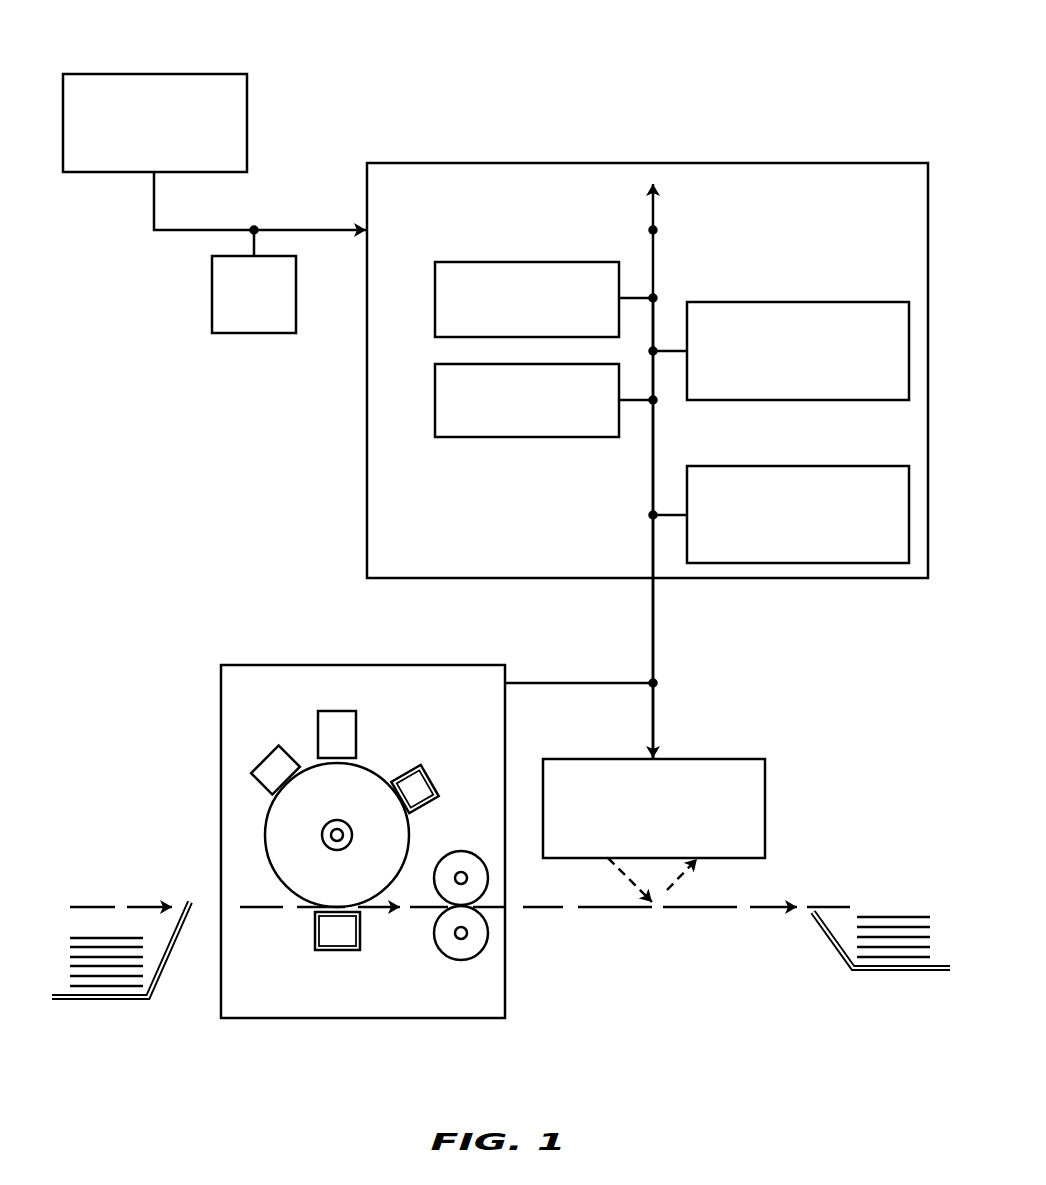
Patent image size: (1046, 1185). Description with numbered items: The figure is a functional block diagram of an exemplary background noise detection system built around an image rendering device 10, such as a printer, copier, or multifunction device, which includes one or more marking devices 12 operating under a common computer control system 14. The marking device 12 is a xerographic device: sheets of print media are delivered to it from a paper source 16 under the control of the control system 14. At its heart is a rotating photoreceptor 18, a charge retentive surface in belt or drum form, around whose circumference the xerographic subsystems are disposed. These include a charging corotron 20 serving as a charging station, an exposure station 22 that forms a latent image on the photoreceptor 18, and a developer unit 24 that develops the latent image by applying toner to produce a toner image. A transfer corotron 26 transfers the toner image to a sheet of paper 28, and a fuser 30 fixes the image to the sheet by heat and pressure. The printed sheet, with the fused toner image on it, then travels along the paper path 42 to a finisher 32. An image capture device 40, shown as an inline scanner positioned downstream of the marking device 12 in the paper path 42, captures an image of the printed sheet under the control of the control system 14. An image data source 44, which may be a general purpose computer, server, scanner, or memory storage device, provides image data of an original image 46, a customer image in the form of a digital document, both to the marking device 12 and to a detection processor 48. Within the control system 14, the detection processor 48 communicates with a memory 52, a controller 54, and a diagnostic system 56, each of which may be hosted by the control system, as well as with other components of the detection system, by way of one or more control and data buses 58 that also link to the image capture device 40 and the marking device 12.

The image rendering device 10 is at (830, 77).
The marking device 12 is at (243, 664).
The control system 14 is at (366, 537).
The paper source 16 is at (105, 998).
The photoreceptor 18 is at (275, 870).
The charging corotron 20 is at (425, 769).
The exposure station 22 is at (356, 732).
The developer unit 24 is at (267, 760).
The transfer corotron 26 is at (315, 942).
The sheet of paper 28 is at (100, 936).
The fuser 30 is at (430, 960).
The finisher 32 is at (895, 905).
The image capture device 40 is at (740, 758).
The paper path 42 is at (600, 908).
The image data source 44 is at (100, 168).
The original image 46 is at (253, 335).
The detection processor 48 is at (821, 302).
The memory 52 is at (435, 301).
The controller 54 is at (435, 406).
The diagnostic system 56 is at (832, 466).
The control and/or data bus 58 is at (655, 248).